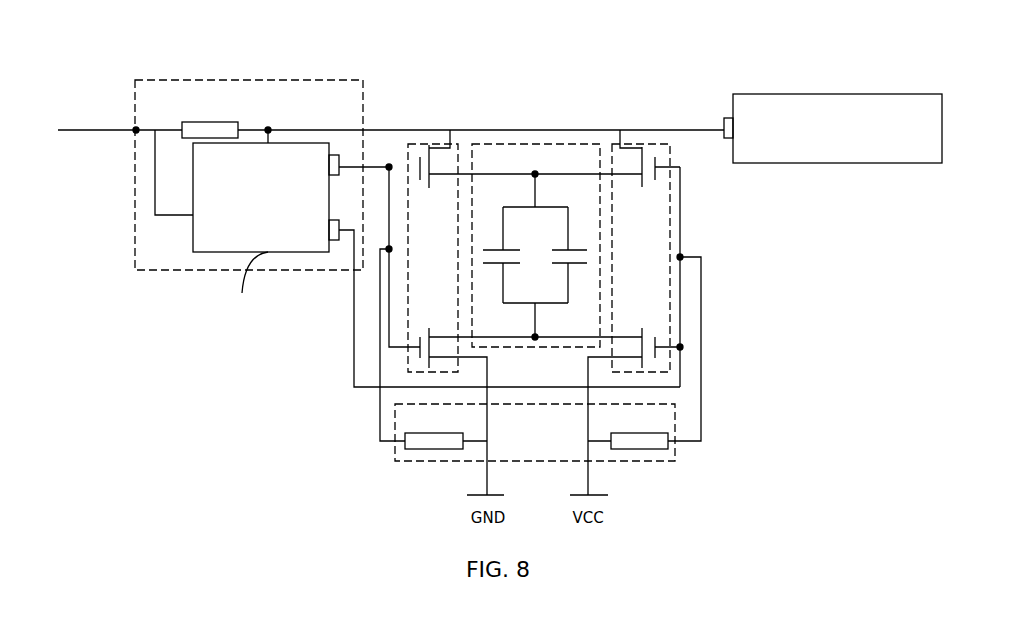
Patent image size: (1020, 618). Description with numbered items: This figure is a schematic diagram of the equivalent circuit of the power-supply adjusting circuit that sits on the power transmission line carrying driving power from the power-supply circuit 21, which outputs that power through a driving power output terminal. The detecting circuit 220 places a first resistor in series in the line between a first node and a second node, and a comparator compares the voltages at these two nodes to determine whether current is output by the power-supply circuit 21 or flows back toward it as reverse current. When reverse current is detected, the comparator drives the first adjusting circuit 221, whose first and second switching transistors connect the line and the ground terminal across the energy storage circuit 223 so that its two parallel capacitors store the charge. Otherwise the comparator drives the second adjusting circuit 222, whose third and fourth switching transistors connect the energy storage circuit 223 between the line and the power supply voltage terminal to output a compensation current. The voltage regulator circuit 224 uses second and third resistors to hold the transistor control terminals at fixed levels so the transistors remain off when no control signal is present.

The power-supply circuit 21 is at (828, 94).
The detecting circuit 220 is at (237, 80).
The first adjusting circuit 221 is at (422, 144).
The second adjusting circuit 222 is at (633, 144).
The energy storage circuit 223 is at (523, 144).
The voltage regulator circuit 224 is at (676, 422).